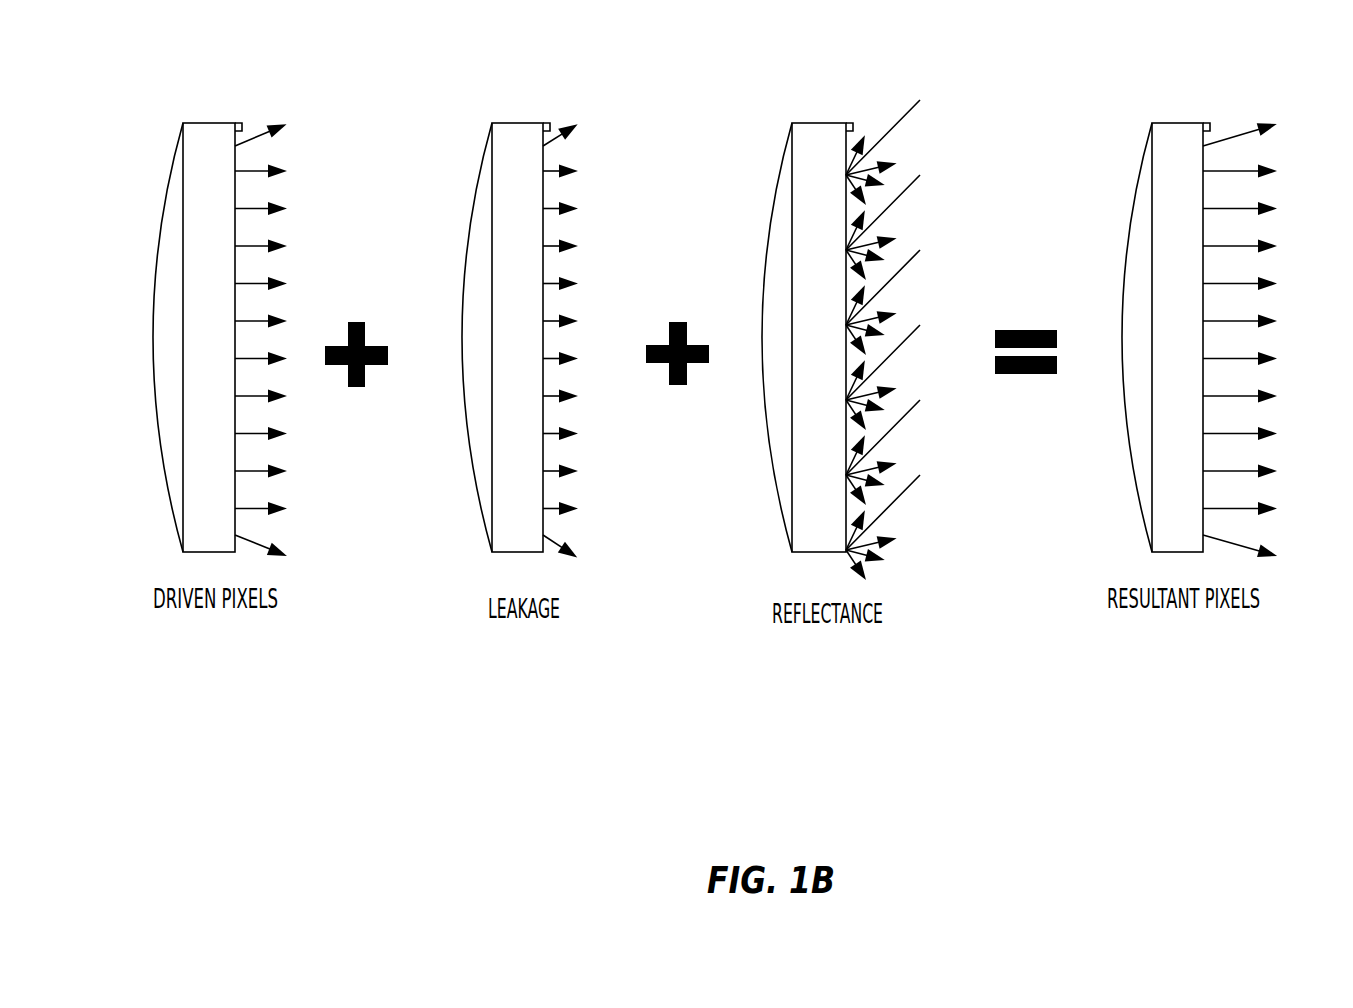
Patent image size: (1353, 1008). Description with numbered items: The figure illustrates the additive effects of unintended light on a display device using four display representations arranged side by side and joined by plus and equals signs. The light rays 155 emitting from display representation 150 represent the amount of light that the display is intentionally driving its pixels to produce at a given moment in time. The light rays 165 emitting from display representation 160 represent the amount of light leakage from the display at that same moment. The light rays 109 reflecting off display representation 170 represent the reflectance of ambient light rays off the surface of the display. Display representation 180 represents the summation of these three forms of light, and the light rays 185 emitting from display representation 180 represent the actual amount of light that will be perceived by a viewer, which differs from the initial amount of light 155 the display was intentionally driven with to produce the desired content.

The display representation 150 is at (196, 66).
The light rays 155 is at (293, 447).
The display representation 160 is at (500, 66).
The light rays 165 is at (586, 447).
The display representation 170 is at (802, 66).
The light rays 109 is at (906, 362).
The display representation 180 is at (1163, 66).
The light rays 185 is at (1282, 447).